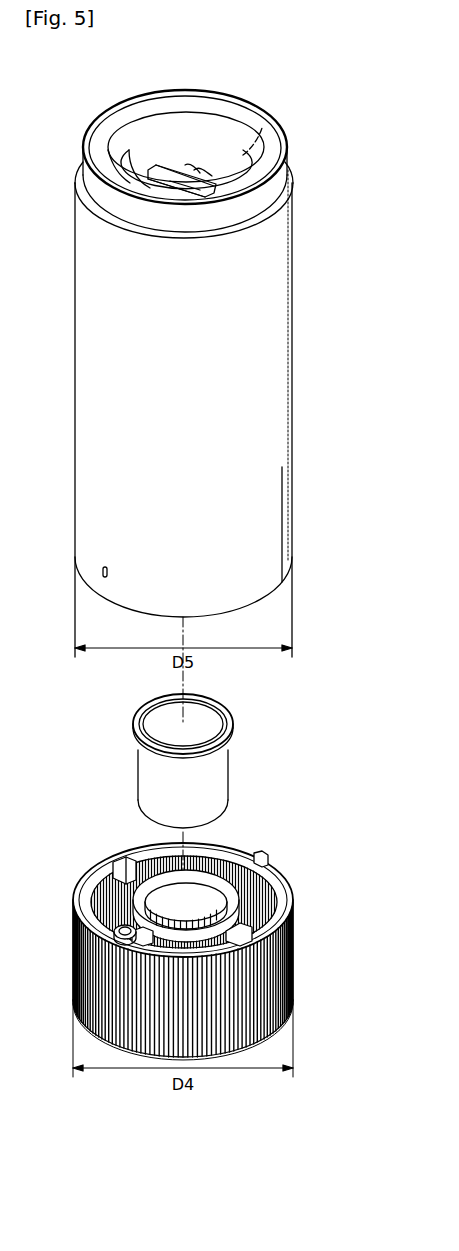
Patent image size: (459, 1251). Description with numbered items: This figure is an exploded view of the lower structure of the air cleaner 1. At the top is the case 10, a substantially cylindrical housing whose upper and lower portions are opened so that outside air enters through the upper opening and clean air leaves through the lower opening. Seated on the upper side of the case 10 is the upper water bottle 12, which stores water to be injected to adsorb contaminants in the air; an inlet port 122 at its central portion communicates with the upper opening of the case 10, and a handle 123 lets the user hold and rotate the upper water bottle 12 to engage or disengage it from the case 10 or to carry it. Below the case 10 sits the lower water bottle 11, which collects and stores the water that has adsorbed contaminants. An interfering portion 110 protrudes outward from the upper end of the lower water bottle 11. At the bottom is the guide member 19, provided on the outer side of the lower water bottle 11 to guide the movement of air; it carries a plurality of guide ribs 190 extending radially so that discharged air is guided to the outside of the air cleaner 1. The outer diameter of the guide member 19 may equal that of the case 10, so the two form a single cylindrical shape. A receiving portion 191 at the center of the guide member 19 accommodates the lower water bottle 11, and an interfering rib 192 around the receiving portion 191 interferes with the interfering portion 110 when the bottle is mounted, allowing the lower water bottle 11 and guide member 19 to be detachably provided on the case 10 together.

The air cleaner 1 is at (316, 88).
The case 10 is at (283, 368).
The lower water bottle 11 is at (222, 780).
The upper water bottle 12 is at (270, 192).
The guide member 19 is at (216, 937).
The interfering portion 110 is at (220, 752).
The inlet port 122 is at (214, 176).
The handle 123 is at (163, 176).
The guide ribs 190 is at (277, 965).
The receiving portion 191 is at (194, 893).
The interfering rib 192 is at (232, 910).